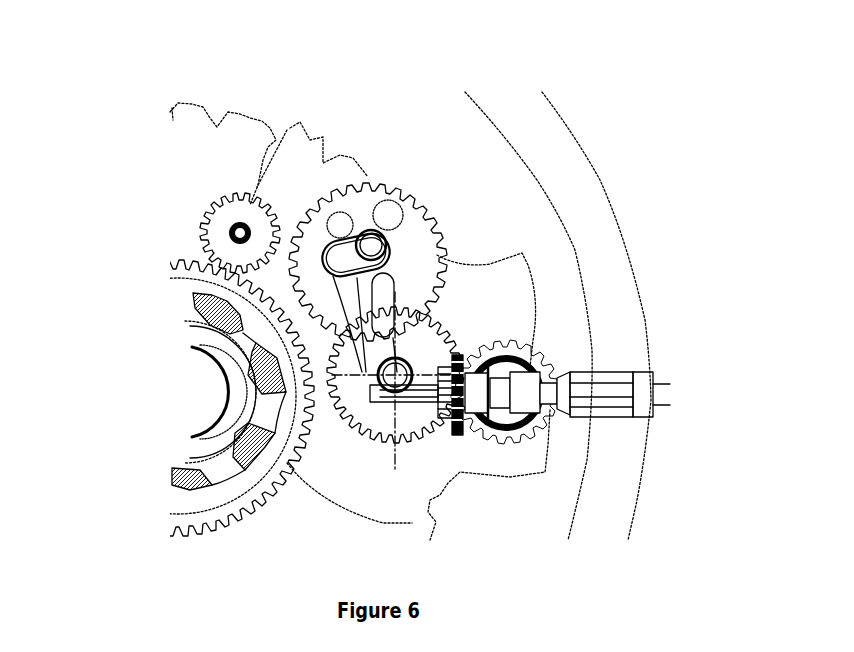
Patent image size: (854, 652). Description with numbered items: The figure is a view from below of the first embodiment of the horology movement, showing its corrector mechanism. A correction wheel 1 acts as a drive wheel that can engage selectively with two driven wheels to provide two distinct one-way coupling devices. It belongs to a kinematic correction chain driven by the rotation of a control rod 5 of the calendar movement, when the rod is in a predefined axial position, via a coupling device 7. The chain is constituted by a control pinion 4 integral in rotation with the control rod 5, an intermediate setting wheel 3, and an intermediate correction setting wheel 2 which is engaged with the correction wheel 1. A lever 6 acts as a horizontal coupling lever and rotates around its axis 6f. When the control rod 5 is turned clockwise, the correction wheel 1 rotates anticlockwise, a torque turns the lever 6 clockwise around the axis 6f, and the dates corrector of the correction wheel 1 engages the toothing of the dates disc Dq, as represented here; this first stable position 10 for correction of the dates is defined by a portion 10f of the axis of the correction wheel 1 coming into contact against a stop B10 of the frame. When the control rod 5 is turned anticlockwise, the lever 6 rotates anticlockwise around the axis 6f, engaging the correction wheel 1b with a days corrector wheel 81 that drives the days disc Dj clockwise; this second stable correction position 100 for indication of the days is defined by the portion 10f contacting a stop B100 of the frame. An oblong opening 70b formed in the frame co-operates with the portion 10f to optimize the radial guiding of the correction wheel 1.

The correction wheel 1 is at (393, 187).
The correction wheel 1b is at (303, 212).
The oblong opening 70b is at (350, 230).
The portion of the axis 10f is at (370, 232).
The first stable position for correction of the dates 10 is at (423, 196).
The stop B10 is at (390, 243).
The lever 6 is at (420, 302).
The axis of the lever 6f is at (394, 378).
The coupling device 7 is at (447, 320).
The control pinion 4 is at (467, 353).
The intermediate setting wheel 3 is at (540, 357).
The control rod 5 is at (667, 390).
The intermediate correction setting wheel 2 is at (381, 427).
The second stable correction position for indication of the days 100 is at (277, 282).
The stop B100 is at (323, 270).
The days corrector wheel 81 is at (197, 225).
The days disc Dj is at (197, 178).
The dates disc Dq is at (448, 502).